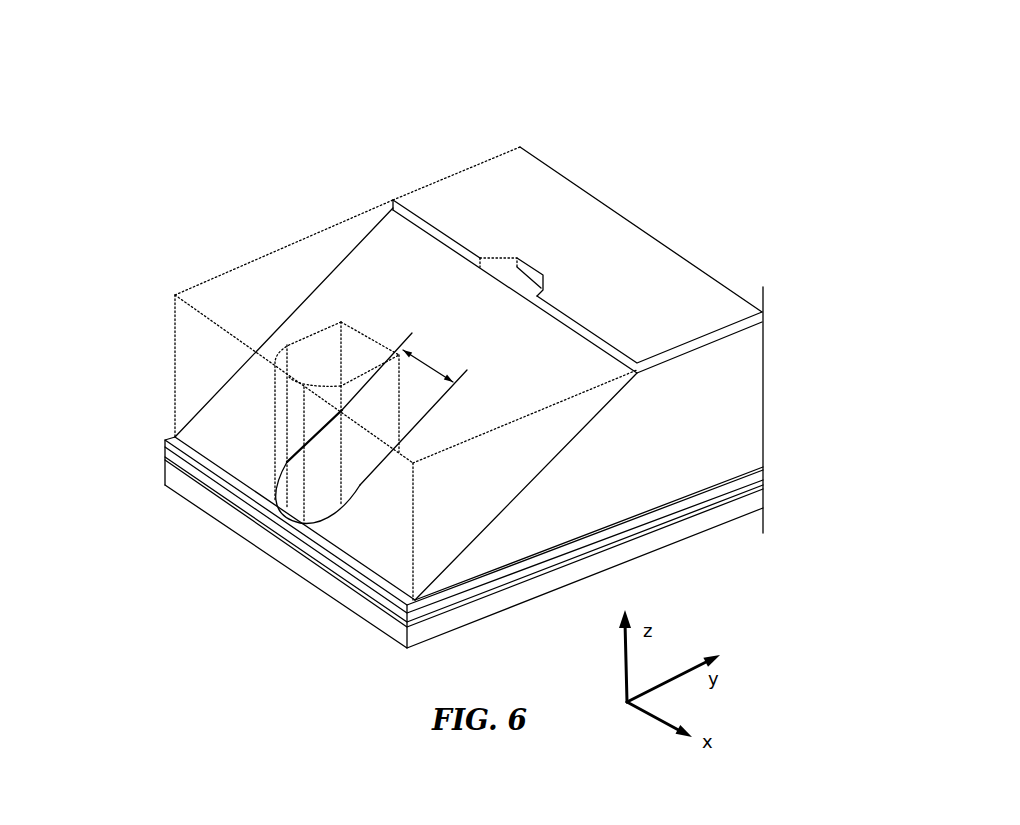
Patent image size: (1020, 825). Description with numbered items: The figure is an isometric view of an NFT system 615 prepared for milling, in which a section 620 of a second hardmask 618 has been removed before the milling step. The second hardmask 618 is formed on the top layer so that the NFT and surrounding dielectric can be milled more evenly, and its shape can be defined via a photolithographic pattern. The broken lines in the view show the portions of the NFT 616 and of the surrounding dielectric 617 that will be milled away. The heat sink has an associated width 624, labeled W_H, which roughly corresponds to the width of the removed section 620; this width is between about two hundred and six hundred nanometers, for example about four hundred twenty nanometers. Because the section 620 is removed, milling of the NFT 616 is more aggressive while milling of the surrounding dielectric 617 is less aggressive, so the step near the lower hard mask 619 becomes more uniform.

The NFT system 615 is at (672, 47).
The NFT 616 is at (286, 494).
The surrounding dielectric 617 is at (368, 245).
The second hardmask 618 is at (507, 167).
The lower hard mask 619 is at (175, 438).
The section 620 is at (518, 282).
The heat sink width 624 is at (442, 363).